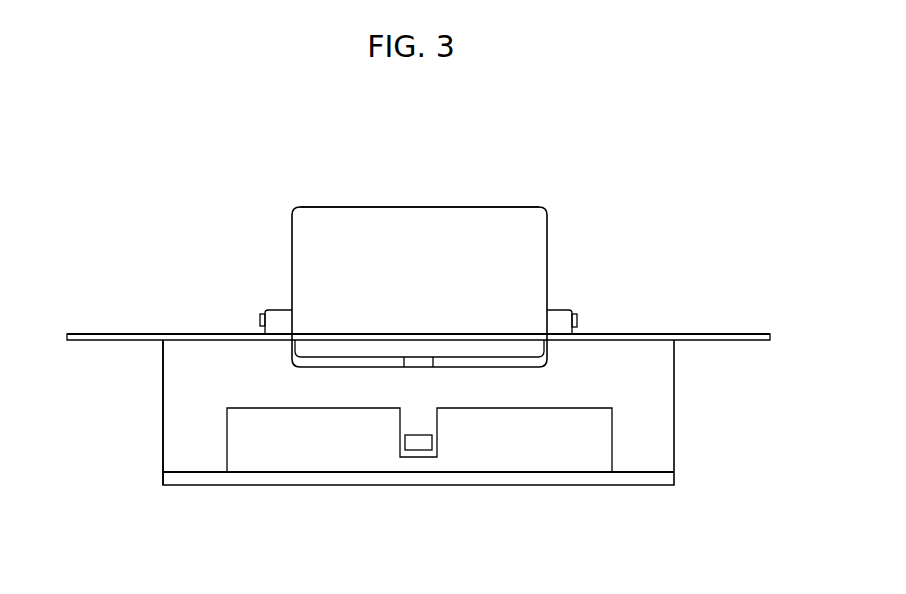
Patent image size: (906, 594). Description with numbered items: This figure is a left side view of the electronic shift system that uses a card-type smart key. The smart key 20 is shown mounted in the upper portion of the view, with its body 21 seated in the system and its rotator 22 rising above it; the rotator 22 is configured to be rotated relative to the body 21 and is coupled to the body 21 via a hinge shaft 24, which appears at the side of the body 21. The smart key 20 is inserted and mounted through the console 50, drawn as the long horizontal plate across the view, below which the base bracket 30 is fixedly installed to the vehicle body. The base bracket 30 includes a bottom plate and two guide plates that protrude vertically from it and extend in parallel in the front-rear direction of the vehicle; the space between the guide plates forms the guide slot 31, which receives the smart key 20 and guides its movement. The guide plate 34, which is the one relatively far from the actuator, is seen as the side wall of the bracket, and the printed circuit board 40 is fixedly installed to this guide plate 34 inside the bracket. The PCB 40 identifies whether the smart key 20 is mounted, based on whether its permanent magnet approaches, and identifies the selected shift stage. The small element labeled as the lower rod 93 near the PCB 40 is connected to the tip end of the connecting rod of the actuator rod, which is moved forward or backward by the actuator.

The card-type smart key 20 is at (450, 197).
The body 21 is at (272, 313).
The rotator 22 is at (350, 220).
The hinge shaft 24 is at (580, 320).
The base bracket 30 is at (609, 486).
The guide slot 31 is at (516, 481).
The guide plate 34 is at (178, 376).
The printed circuit board 40 is at (303, 452).
The console 50 is at (720, 336).
The lower rod 93 is at (418, 448).